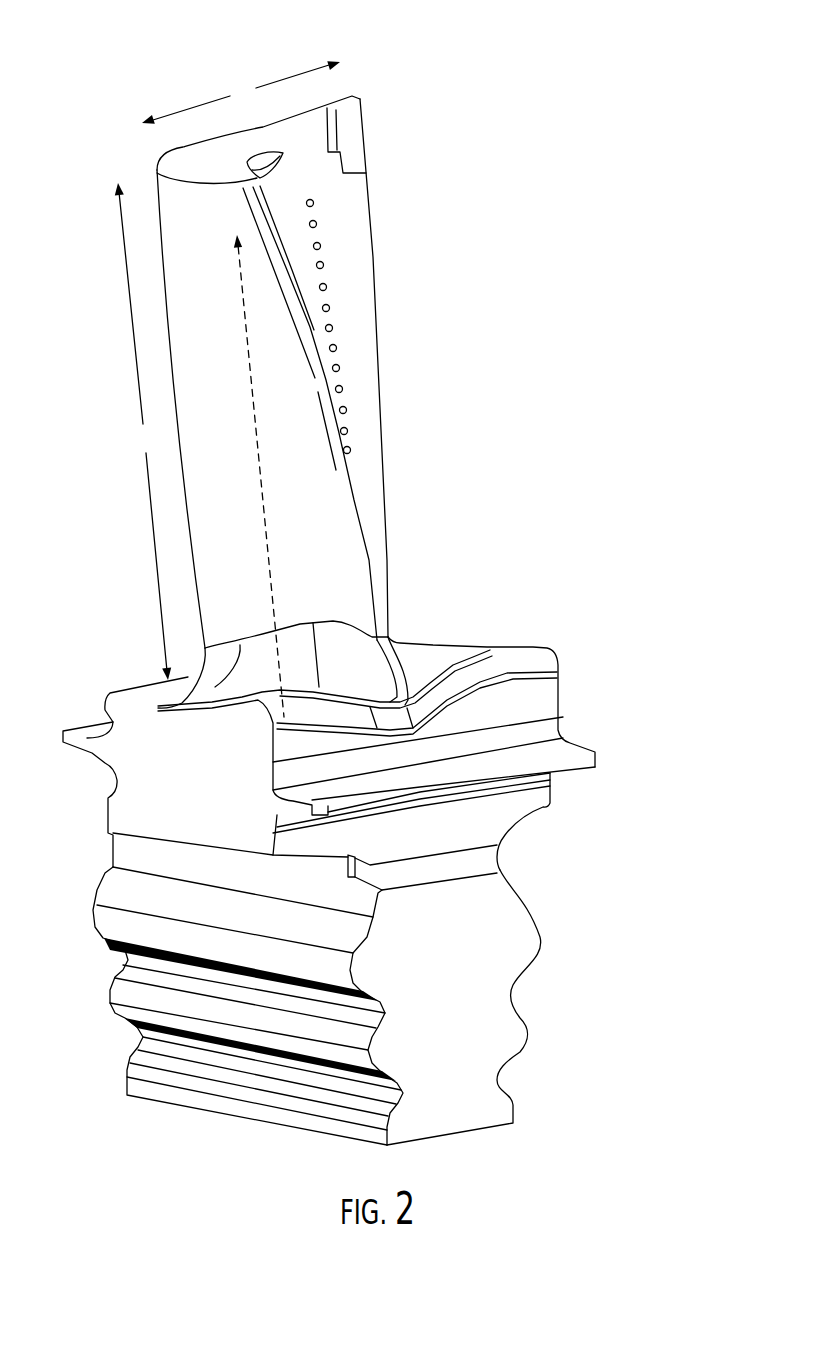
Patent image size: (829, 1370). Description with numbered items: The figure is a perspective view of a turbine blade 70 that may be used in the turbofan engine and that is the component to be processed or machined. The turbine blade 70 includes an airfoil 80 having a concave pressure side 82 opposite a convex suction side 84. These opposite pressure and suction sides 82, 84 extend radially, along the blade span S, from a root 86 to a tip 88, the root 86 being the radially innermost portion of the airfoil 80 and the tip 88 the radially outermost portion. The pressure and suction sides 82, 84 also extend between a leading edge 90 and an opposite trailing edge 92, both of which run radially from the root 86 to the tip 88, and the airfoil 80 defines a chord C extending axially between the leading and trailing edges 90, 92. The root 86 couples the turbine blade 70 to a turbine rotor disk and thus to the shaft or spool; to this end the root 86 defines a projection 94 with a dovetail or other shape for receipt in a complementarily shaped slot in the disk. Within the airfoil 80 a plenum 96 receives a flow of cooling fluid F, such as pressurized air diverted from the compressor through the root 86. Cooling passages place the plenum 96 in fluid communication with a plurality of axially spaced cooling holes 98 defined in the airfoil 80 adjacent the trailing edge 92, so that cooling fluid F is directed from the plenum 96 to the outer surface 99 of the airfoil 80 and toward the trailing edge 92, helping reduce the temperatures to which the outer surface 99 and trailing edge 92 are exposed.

The turbine blade 70 is at (527, 85).
The airfoil 80 is at (285, 353).
The pressure side 82 is at (337, 234).
The suction side 84 is at (333, 97).
The root 86 is at (586, 993).
The tip 88 is at (365, 90).
The leading edge 90 is at (158, 335).
The trailing edge 92 is at (395, 380).
The projection 94 is at (397, 1050).
The plenum 96 is at (278, 476).
The cooling holes 98 is at (314, 203).
The outer surface 99 is at (167, 223).